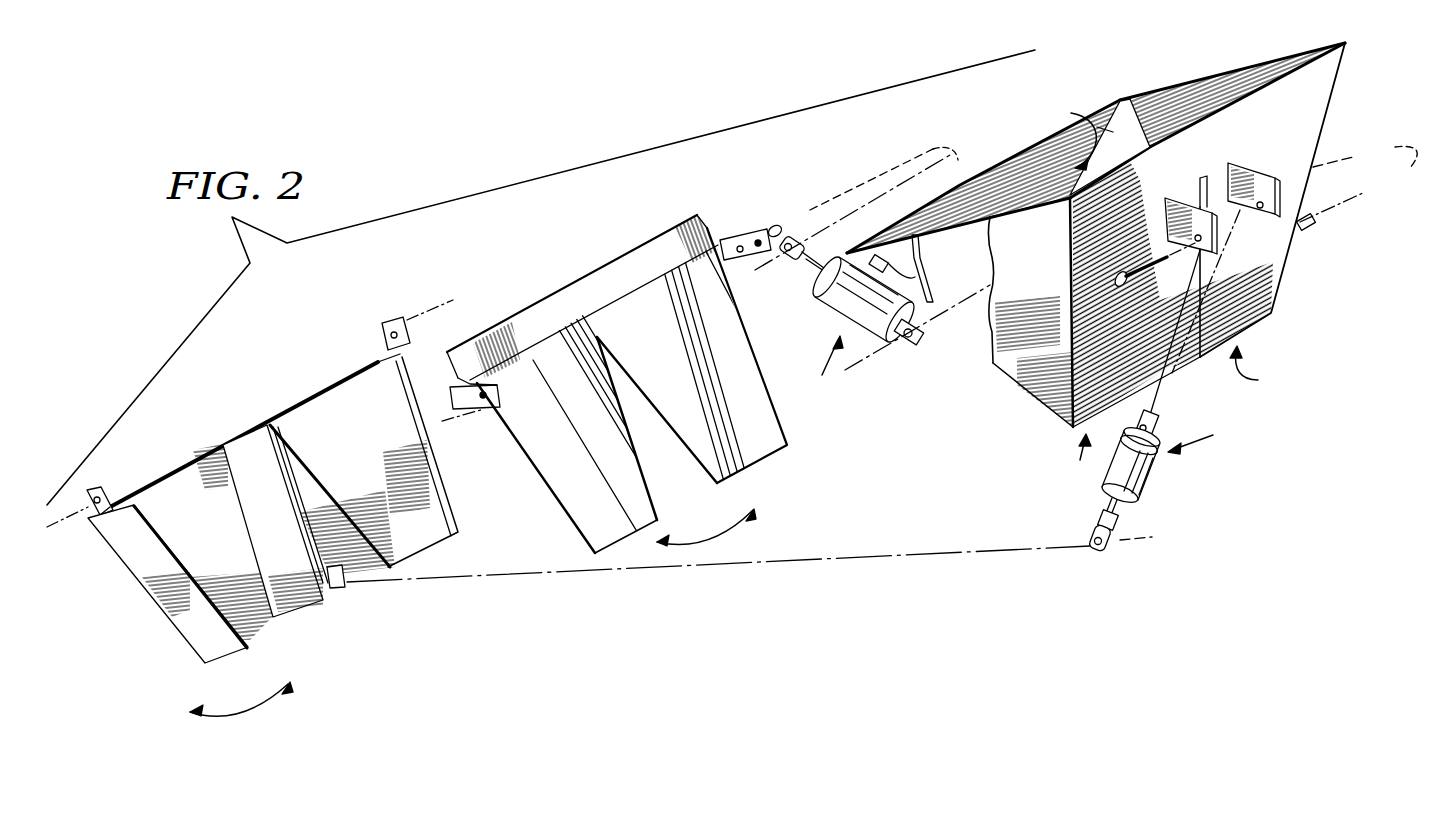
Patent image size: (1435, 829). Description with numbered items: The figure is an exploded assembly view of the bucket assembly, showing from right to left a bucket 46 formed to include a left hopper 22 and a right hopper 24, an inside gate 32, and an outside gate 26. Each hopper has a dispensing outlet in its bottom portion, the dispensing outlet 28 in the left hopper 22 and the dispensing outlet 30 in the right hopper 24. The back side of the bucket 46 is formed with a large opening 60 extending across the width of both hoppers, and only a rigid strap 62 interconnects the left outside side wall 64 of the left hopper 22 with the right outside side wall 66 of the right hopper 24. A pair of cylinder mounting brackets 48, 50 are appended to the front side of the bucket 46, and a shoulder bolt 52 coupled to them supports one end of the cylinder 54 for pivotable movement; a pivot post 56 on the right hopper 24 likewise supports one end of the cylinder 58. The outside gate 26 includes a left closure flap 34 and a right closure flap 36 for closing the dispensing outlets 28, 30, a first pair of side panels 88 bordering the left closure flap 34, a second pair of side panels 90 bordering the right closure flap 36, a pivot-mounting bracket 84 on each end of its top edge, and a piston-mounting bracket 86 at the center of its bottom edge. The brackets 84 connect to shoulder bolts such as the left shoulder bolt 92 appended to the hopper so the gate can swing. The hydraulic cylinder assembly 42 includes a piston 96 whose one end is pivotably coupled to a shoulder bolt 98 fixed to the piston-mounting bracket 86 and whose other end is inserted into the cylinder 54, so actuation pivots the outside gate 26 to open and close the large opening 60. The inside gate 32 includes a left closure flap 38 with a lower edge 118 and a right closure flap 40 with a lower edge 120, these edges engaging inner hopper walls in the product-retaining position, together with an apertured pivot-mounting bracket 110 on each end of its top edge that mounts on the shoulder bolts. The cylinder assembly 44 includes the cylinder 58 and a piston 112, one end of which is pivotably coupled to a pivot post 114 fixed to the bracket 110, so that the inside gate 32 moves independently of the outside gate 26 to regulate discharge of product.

The left hopper 22 is at (1065, 380).
The right hopper 24 is at (1273, 313).
The outside gate 26 is at (323, 376).
The dispensing outlet 28 is at (1074, 462).
The dispensing outlet 30 is at (1258, 366).
The inside gate 32 is at (613, 260).
The left closure flap 34 is at (257, 615).
The right closure flap 36 is at (383, 543).
The left closure flap 38 is at (577, 500).
The right closure flap 40 is at (767, 430).
The hydraulic cylinder assembly 42 is at (1141, 481).
The cylinder assembly 44 is at (872, 277).
The bucket 46 is at (1330, 132).
The cylinder mounting bracket 48 is at (1167, 223).
The cylinder mounting bracket 50 is at (1257, 173).
The shoulder bolt 52 is at (1125, 284).
The cylinder 54 is at (1153, 470).
The pivot post 56 is at (1300, 228).
The cylinder 58 is at (855, 303).
The large opening 60 is at (1091, 146).
The rigid strap 62 is at (1003, 177).
The left outside side wall 64 is at (1013, 370).
The right outside side wall 66 is at (1230, 92).
The pivot-mounting bracket 84 is at (97, 480).
The piston-mounting bracket 86 is at (338, 595).
The first pair of side panels 88 is at (252, 467).
The second pair of side panels 90 is at (430, 507).
The left shoulder bolt 92 is at (927, 272).
The piston 96 is at (1092, 523).
The shoulder bolt 98 is at (323, 563).
The pivot-mounting bracket 110 is at (467, 420).
The piston 112 is at (817, 272).
The pivot post 114 is at (773, 226).
The lower edge 118 is at (650, 530).
The lower edge 120 is at (770, 450).